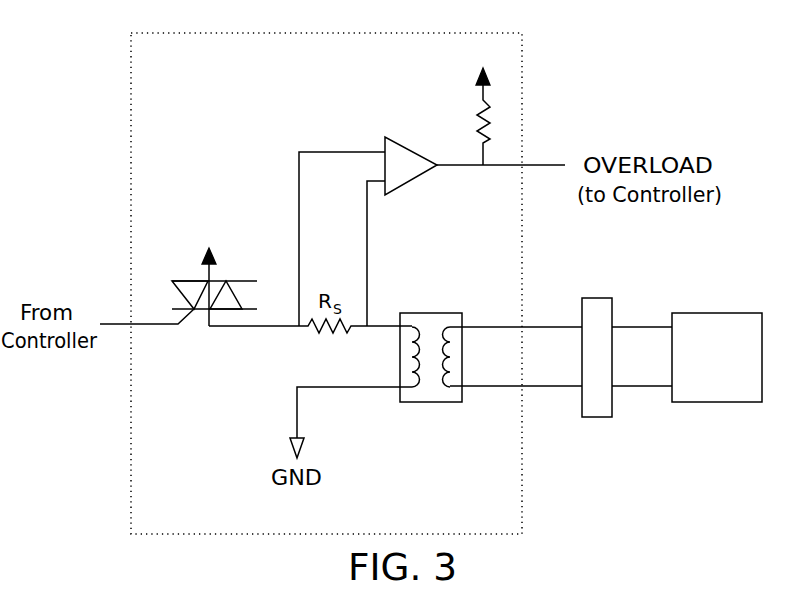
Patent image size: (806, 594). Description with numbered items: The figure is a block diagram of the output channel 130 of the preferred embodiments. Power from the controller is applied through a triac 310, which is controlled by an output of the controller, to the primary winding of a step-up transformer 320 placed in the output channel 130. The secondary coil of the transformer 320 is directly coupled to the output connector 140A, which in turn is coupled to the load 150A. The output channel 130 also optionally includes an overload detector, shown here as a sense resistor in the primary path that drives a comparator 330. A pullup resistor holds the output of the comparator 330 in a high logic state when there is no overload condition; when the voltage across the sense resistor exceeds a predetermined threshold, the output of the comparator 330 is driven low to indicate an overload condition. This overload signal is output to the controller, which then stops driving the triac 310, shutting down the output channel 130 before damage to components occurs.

The output channel 130 is at (521, 66).
The triac 310 is at (230, 281).
The step-up transformer 320 is at (427, 402).
The comparator 330 is at (402, 190).
The output connector 140A is at (597, 298).
The load 150A is at (743, 397).